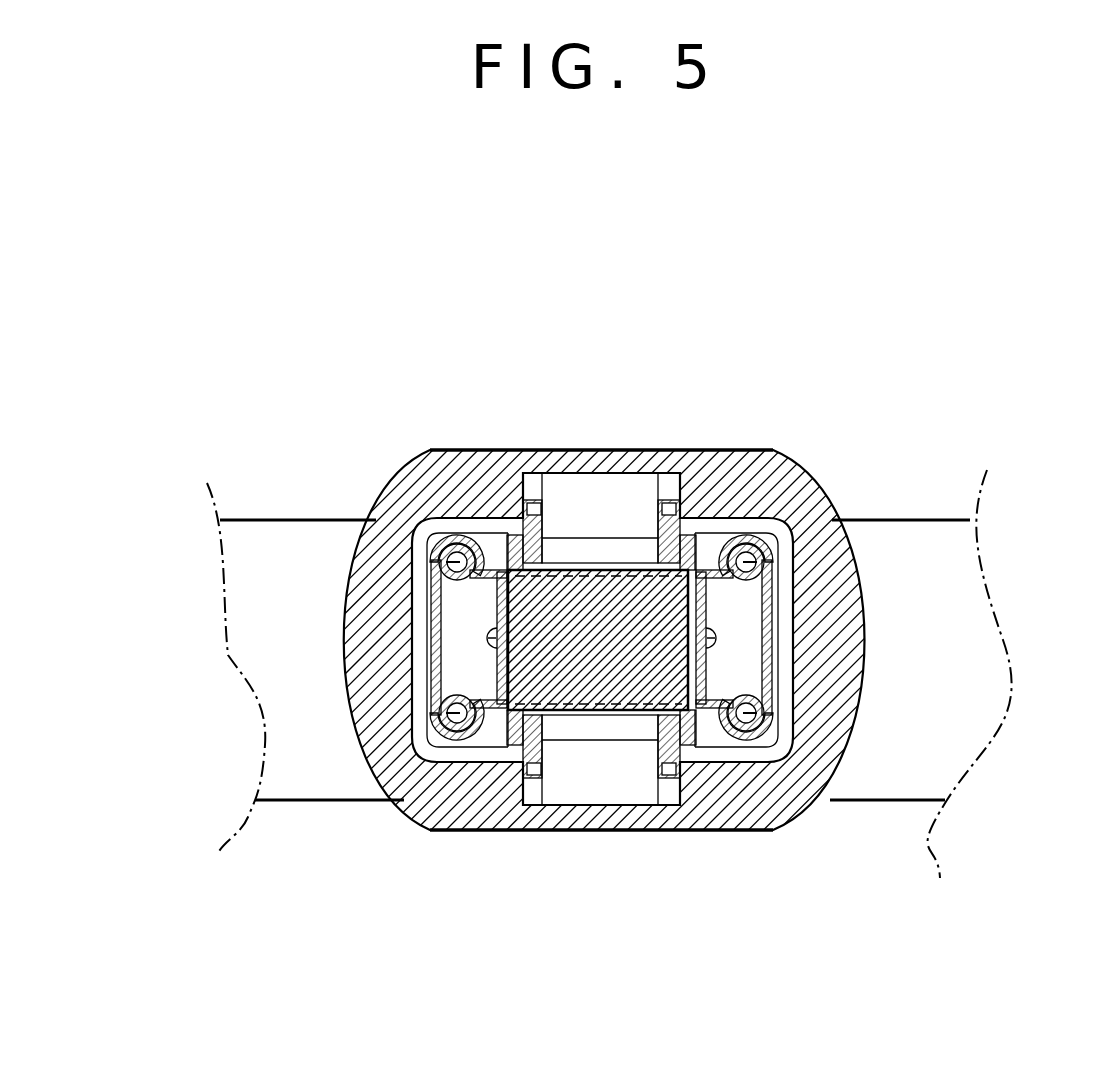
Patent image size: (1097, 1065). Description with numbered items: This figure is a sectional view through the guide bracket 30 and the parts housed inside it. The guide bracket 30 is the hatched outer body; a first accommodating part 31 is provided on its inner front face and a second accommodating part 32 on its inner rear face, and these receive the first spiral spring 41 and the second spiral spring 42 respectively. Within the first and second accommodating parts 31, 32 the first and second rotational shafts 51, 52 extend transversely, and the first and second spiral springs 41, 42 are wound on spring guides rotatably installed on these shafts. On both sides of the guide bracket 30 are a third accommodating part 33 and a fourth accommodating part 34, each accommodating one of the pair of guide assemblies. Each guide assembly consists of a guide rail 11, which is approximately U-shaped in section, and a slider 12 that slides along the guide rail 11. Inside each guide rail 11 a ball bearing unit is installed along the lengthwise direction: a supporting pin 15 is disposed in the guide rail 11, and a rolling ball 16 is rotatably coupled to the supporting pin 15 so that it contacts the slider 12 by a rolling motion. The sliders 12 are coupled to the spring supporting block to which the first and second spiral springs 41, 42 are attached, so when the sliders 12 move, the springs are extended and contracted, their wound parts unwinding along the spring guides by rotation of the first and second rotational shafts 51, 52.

The guide rail 11 is at (775, 665).
The slider 12 is at (770, 690).
The supporting pin 15 is at (770, 618).
The rolling ball 16 is at (778, 558).
The guide bracket 30 is at (760, 452).
The first accommodating part 31 is at (675, 452).
The second accommodating part 32 is at (548, 802).
The third accommodating part 33 is at (714, 544).
The fourth accommodating part 34 is at (499, 543).
The first spiral spring 41 is at (595, 488).
The second spiral spring 42 is at (587, 788).
The first rotational shaft 51 is at (533, 500).
The second rotational shaft 52 is at (674, 770).